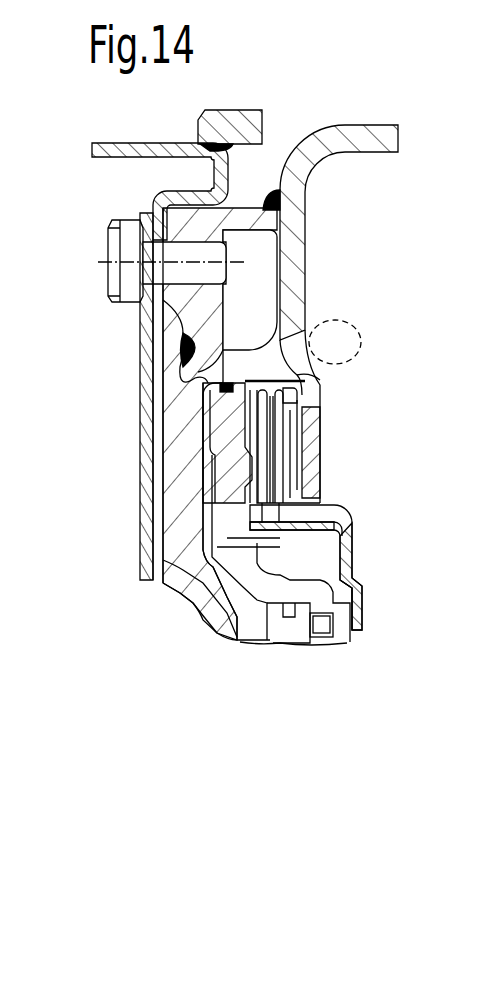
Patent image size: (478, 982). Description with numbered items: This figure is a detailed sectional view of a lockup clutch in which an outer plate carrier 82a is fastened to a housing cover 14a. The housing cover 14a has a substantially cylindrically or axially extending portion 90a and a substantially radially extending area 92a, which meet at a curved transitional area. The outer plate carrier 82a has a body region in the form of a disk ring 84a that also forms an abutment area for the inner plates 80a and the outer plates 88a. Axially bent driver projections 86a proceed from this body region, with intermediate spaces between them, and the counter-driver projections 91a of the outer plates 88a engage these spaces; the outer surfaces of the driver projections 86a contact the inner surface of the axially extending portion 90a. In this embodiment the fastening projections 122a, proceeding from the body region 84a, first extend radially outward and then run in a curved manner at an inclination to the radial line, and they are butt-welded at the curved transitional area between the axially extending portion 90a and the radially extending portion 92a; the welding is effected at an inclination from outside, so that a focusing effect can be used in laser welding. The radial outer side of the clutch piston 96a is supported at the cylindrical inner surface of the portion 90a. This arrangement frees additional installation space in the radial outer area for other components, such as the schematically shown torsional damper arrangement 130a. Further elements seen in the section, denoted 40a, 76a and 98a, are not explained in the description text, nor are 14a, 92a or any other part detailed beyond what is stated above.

The housing cover 14a is at (406, 159).
The radially extending area of the housing cover 92a is at (292, 260).
The torsional damper arrangement 130a is at (340, 318).
The fastening projections 122a is at (444, 334).
The counter-driver projections 91a is at (247, 403).
The outer plates 88a is at (283, 432).
The disk ring 84a is at (303, 452).
The inner plates 80a is at (273, 472).
The outer plate carrier 82a is at (350, 497).
The wheel bearing unit 40a is at (450, 519).
The flange 76a is at (362, 590).
The clutch piston 96a is at (227, 540).
The bracket 98a is at (288, 632).
The driver projections 86a is at (165, 330).
The axially extending portion of the housing cover 90a is at (220, 367).